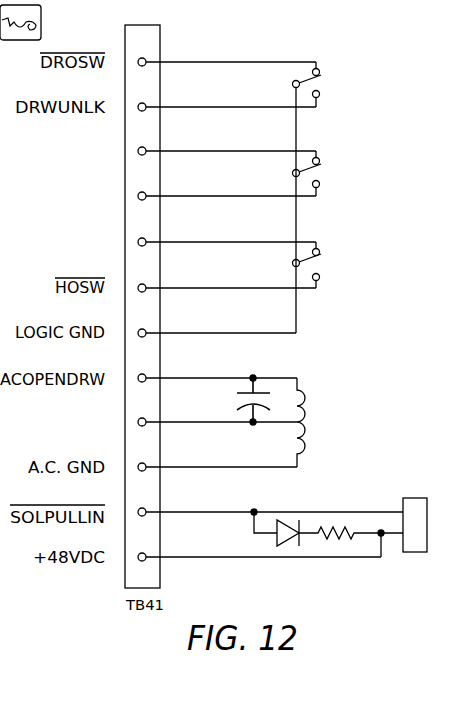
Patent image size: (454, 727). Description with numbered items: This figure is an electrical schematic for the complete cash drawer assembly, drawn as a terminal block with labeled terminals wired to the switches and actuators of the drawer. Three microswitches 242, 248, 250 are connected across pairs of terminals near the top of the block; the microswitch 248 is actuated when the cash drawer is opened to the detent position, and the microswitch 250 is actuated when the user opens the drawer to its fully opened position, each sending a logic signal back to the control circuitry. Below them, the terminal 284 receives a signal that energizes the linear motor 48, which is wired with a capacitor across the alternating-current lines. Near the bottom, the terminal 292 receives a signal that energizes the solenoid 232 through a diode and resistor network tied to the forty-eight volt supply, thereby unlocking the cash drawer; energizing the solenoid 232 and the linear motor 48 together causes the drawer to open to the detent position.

The microswitch 242 is at (322, 83).
The microswitch 248 is at (322, 173).
The microswitch 250 is at (320, 264).
The terminal 284 is at (145, 375).
The linear motor 48 is at (305, 424).
The terminal 292 is at (145, 509).
The solenoid 232 is at (405, 499).